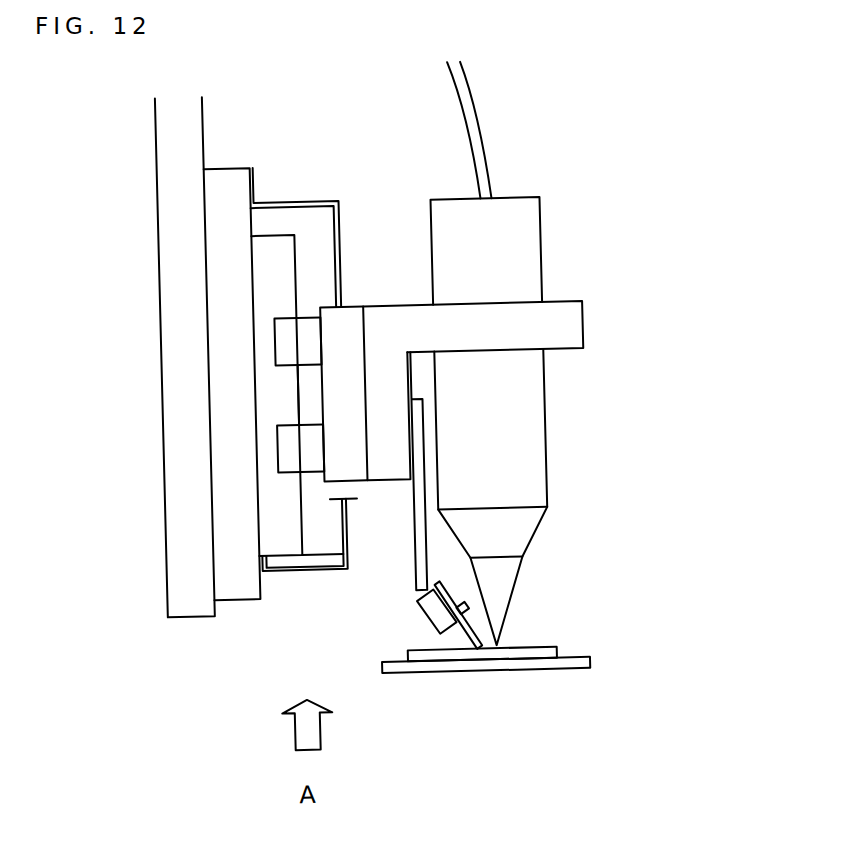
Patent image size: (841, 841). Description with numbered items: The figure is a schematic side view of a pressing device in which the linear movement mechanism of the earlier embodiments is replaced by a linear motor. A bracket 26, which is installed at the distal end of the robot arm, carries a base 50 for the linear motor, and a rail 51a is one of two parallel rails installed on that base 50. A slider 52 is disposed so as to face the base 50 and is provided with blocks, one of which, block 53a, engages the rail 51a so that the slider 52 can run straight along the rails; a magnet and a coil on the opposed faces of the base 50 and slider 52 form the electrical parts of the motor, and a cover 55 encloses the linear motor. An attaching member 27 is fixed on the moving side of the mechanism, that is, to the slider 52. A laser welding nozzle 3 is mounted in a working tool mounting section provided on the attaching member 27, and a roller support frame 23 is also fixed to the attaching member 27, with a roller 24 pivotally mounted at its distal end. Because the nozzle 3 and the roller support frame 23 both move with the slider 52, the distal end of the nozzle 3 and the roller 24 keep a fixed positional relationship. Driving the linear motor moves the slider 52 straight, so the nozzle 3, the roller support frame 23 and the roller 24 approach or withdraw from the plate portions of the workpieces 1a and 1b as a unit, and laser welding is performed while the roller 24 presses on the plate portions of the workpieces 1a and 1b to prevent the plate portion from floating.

The bracket 26 is at (178, 191).
The base 50 is at (219, 262).
The rail 51a is at (272, 540).
The cover 55 is at (303, 199).
The block 53a is at (289, 339).
The slider 52 is at (340, 305).
The attaching member 27 is at (586, 316).
The laser welding nozzle 3 is at (543, 418).
The roller support frame 23 is at (416, 550).
The roller 24 is at (412, 600).
The workpiece 1b is at (530, 650).
The workpiece 1a is at (579, 661).